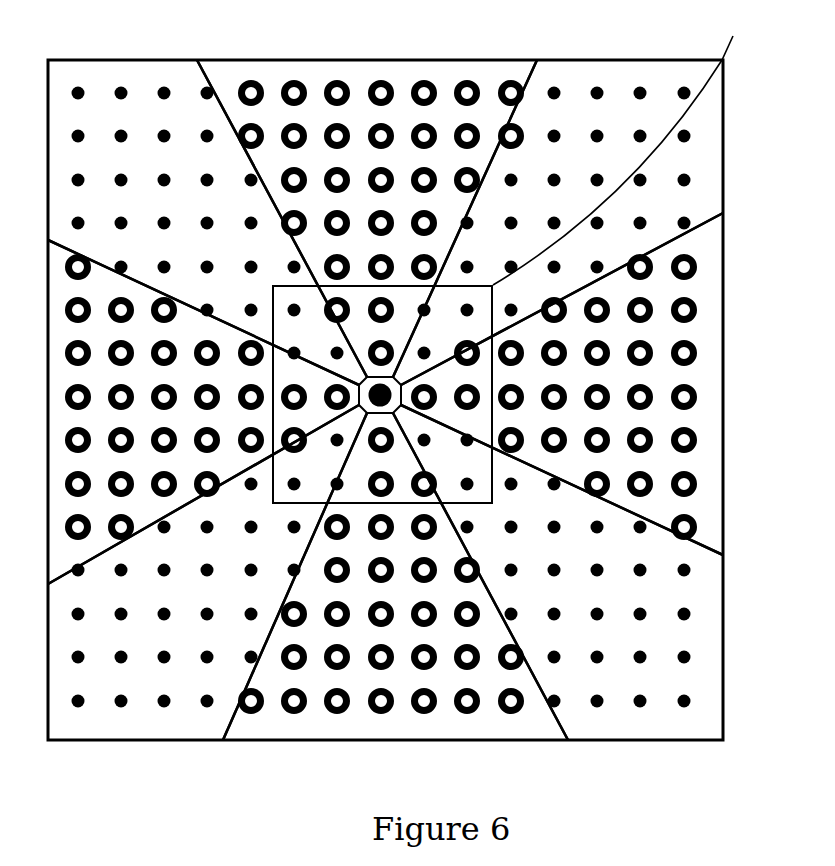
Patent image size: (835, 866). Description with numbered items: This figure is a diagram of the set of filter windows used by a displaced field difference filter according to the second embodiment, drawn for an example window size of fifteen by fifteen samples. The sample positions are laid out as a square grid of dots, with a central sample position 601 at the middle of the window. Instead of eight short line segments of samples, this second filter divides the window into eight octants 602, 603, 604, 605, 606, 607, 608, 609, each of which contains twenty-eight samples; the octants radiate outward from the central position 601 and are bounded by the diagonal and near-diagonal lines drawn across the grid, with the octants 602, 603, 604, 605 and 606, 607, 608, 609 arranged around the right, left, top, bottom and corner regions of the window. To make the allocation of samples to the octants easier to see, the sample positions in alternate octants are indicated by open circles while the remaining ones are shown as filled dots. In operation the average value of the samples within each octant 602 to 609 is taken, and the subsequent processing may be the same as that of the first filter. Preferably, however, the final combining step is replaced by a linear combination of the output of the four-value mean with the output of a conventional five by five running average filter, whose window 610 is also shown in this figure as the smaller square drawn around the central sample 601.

The central pixel 601 is at (392, 374).
The octant 602 is at (730, 425).
The octant 603 is at (43, 333).
The octant 604 is at (298, 52).
The octant 605 is at (315, 748).
The octant 606 is at (730, 105).
The octant 607 is at (90, 748).
The octant 608 is at (97, 52).
The octant 609 is at (682, 748).
The window 610 is at (623, 150).